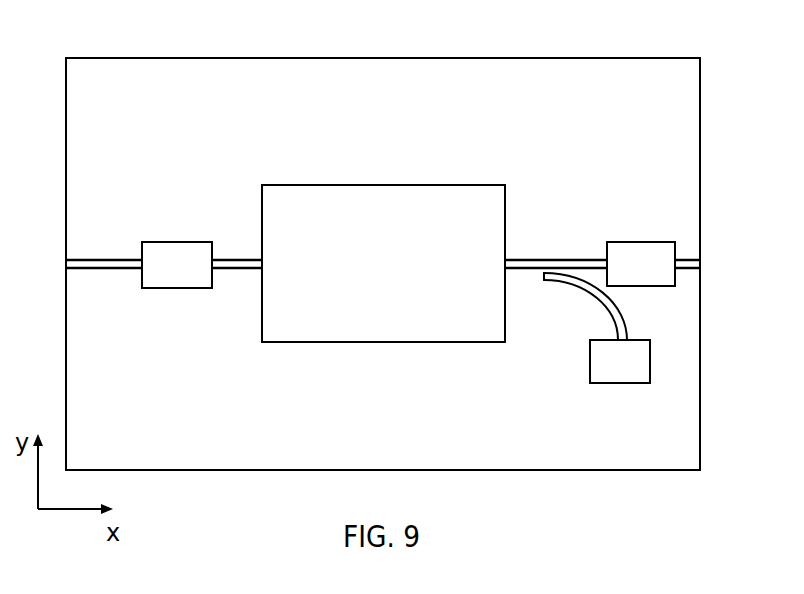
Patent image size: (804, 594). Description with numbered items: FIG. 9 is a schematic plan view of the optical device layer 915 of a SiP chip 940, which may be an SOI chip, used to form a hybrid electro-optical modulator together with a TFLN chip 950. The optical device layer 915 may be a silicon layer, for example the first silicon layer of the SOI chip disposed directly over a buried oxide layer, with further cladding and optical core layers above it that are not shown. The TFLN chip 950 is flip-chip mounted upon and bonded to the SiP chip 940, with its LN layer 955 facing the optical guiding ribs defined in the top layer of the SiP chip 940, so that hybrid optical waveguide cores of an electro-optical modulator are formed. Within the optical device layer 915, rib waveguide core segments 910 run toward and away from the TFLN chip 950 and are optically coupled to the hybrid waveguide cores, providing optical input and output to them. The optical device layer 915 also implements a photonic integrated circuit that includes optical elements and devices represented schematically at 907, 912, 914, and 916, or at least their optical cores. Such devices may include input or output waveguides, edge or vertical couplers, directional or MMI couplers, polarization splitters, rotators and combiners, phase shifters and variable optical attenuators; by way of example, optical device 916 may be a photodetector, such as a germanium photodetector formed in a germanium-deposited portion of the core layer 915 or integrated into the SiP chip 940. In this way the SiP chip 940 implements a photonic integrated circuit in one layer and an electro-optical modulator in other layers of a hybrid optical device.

The SiP chip 940 is at (350, 58).
The optical device layer 915 is at (180, 101).
The TFLN chip 950 is at (332, 185).
The LN layer 955 is at (403, 256).
The optical device 907 is at (87, 255).
The rib waveguide core segments 910 is at (245, 257).
The optical device 912 is at (175, 288).
The optical device 914 is at (643, 242).
The optical device 916 is at (618, 383).